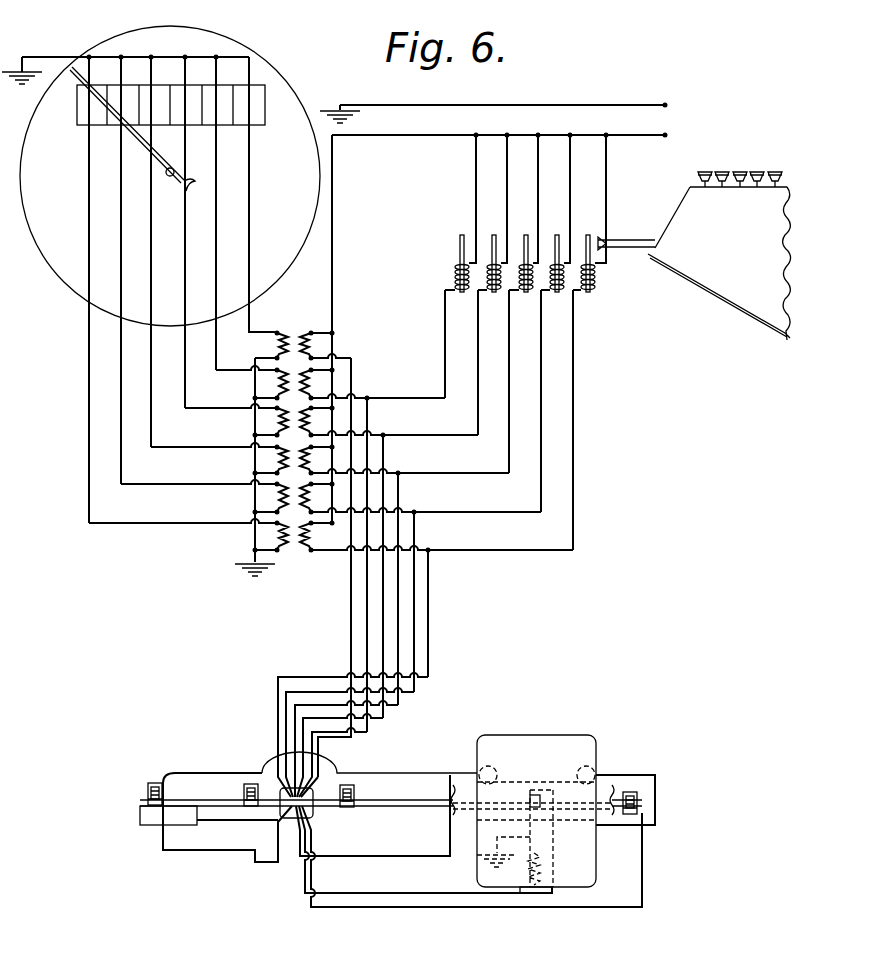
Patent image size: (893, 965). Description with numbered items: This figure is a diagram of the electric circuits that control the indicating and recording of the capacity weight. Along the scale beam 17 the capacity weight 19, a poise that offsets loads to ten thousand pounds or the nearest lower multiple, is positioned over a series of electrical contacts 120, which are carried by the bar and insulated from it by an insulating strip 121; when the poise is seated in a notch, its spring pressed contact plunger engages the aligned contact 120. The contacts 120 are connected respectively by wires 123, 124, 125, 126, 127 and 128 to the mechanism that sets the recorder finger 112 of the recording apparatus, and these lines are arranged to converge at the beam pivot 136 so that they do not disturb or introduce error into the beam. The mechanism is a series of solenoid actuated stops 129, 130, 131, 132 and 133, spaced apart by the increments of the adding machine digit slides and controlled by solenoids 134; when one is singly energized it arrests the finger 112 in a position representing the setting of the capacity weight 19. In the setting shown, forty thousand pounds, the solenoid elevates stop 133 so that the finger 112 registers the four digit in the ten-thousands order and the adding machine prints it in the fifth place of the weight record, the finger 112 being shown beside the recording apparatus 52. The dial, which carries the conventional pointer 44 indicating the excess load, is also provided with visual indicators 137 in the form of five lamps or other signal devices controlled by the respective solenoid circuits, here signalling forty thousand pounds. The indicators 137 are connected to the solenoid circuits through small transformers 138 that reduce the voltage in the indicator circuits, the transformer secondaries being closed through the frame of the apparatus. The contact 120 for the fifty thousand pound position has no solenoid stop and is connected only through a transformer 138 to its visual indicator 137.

The visual indicators 137 is at (248, 87).
The pointer 44 is at (132, 140).
The transformers 138 is at (304, 345).
The solenoid actuated stop 133 is at (460, 247).
The solenoid actuated stop 132 is at (493, 258).
The solenoid actuated stop 131 is at (525, 258).
The solenoid actuated stop 130 is at (557, 258).
The solenoid actuated stop 129 is at (588, 258).
The solenoids 134 is at (597, 283).
The recorder finger 112 is at (636, 240).
The hopper 52 is at (718, 283).
The wire 128 is at (351, 626).
The wire 127 is at (367, 604).
The wire 126 is at (381, 580).
The wire 125 is at (400, 580).
The wire 124 is at (414, 602).
The wire 123 is at (428, 626).
The scale lever 17 is at (187, 782).
The electrical contacts 120 is at (243, 788).
The insulating strip 121 is at (397, 806).
The contact hub 136 is at (292, 801).
The capacity weight 19 is at (559, 748).